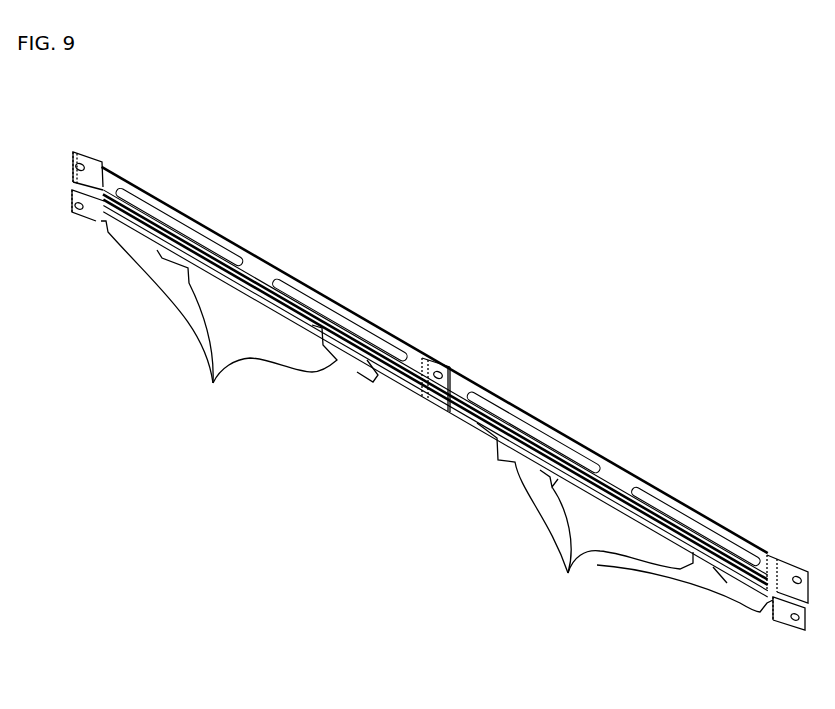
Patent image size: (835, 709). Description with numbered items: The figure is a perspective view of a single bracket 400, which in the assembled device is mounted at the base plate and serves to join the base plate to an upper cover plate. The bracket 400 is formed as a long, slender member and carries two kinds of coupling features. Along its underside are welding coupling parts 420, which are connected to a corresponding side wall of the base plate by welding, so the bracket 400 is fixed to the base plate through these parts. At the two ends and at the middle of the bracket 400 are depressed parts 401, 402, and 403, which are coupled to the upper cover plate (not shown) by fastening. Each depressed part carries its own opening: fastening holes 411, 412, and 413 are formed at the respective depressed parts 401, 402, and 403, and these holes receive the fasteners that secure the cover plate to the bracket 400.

The bracket 400 is at (85, 132).
The depressed part 401 is at (78, 217).
The fastening hole 411 is at (47, 215).
The depressed part 402 is at (427, 422).
The fastening hole 412 is at (404, 420).
The depressed part 403 is at (775, 618).
The fastening hole 413 is at (777, 540).
The welding coupling part 420 is at (437, 416).